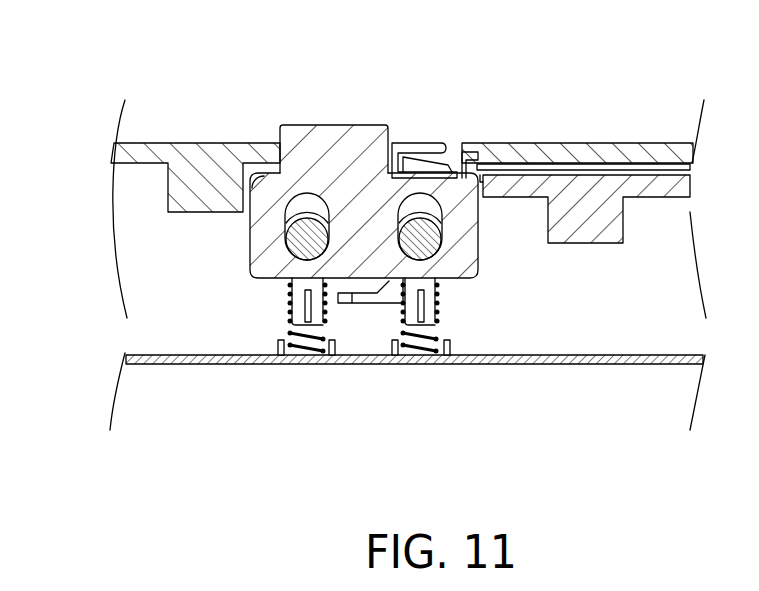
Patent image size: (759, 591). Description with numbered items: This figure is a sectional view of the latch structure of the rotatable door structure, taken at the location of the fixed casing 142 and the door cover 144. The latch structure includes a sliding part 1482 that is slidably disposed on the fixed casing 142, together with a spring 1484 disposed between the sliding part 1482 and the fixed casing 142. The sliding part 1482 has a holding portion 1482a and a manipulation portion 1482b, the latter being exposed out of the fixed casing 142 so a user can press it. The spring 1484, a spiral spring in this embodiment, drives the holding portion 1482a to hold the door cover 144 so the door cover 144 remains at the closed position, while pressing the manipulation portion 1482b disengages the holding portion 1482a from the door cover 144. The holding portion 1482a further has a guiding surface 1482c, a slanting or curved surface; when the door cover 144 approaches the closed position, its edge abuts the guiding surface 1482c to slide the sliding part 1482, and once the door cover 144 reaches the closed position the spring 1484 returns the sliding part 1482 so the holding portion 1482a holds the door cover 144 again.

The fixed casing 142 is at (237, 143).
The door cover 144 is at (582, 143).
The sliding part 1482 is at (260, 240).
The holding portion 1482a is at (462, 152).
The manipulation portion 1482b is at (333, 140).
The guiding surface 1482c is at (474, 163).
The spring 1484 is at (437, 323).